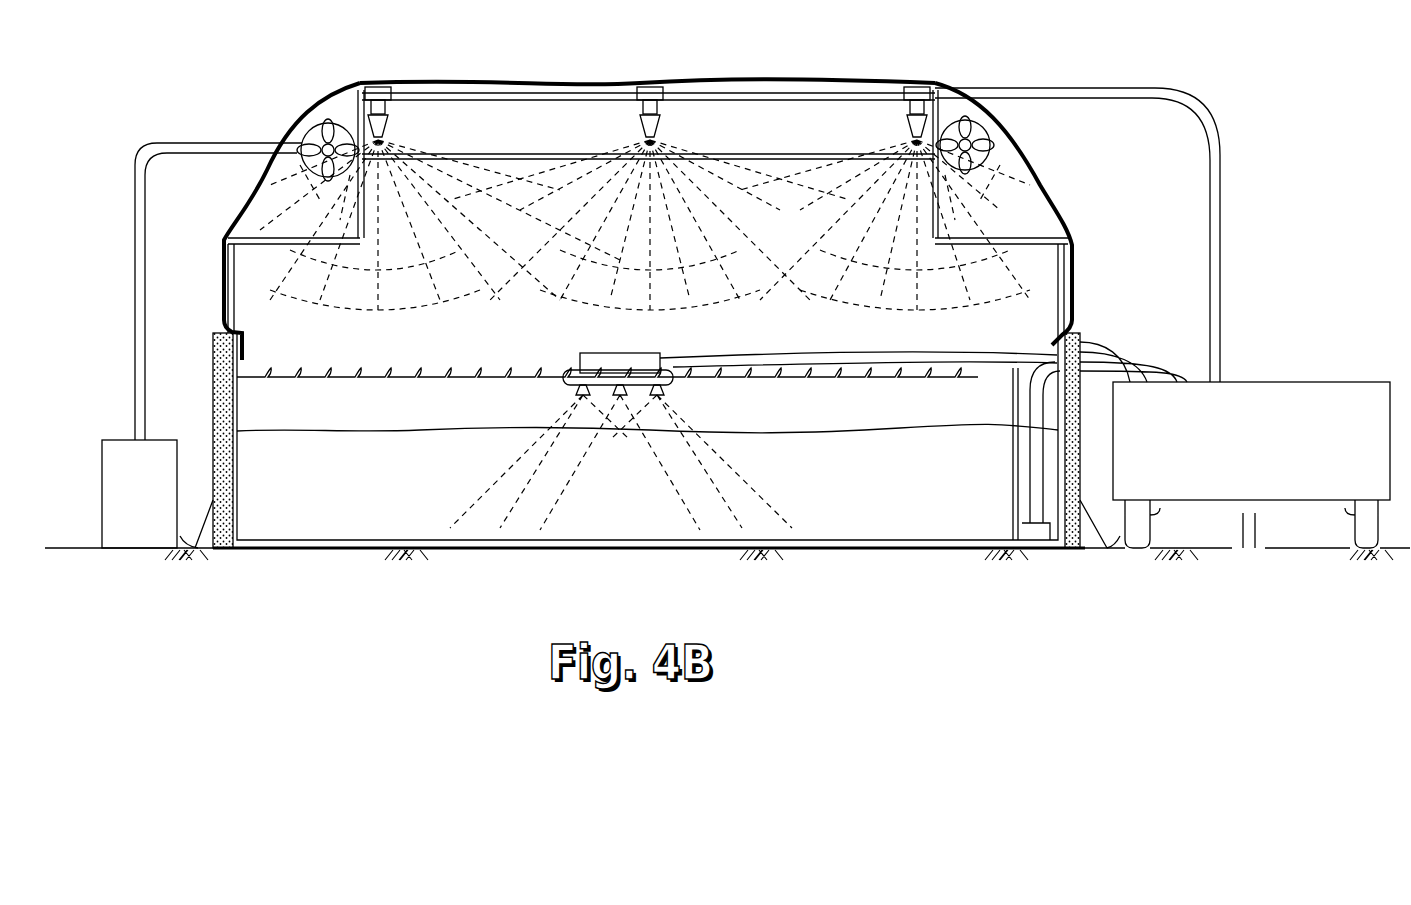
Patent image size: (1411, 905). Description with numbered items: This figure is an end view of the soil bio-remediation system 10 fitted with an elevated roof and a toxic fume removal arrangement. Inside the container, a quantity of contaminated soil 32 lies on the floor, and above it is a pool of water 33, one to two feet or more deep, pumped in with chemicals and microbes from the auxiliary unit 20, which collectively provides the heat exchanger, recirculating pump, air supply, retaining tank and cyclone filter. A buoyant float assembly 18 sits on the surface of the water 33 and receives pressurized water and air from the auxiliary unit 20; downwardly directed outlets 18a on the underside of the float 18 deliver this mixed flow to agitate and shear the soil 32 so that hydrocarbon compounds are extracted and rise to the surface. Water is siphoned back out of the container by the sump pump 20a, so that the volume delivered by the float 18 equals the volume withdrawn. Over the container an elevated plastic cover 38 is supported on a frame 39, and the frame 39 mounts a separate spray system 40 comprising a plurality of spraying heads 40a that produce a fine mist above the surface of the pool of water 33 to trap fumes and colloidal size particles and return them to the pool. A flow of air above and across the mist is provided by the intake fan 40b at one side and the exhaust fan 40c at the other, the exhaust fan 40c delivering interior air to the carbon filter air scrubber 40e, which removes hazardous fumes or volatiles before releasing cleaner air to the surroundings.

The system 10 is at (1065, 184).
The buoyant float assembly 18 is at (605, 357).
The aerator nozzles 18a is at (668, 393).
The auxiliary unit 20 is at (1201, 455).
The sump pump 20a is at (1095, 385).
The contaminated soil 32 is at (647, 458).
The water pool 33 is at (607, 393).
The elevated plastic cover 38 is at (1035, 177).
The frame 39 is at (1040, 240).
The spray system 40 is at (1135, 88).
The spraying heads 40a is at (662, 129).
The intake fan 40b is at (980, 136).
The exhaust fan 40c is at (312, 135).
The carbon filter air scrubber 40e is at (139, 494).